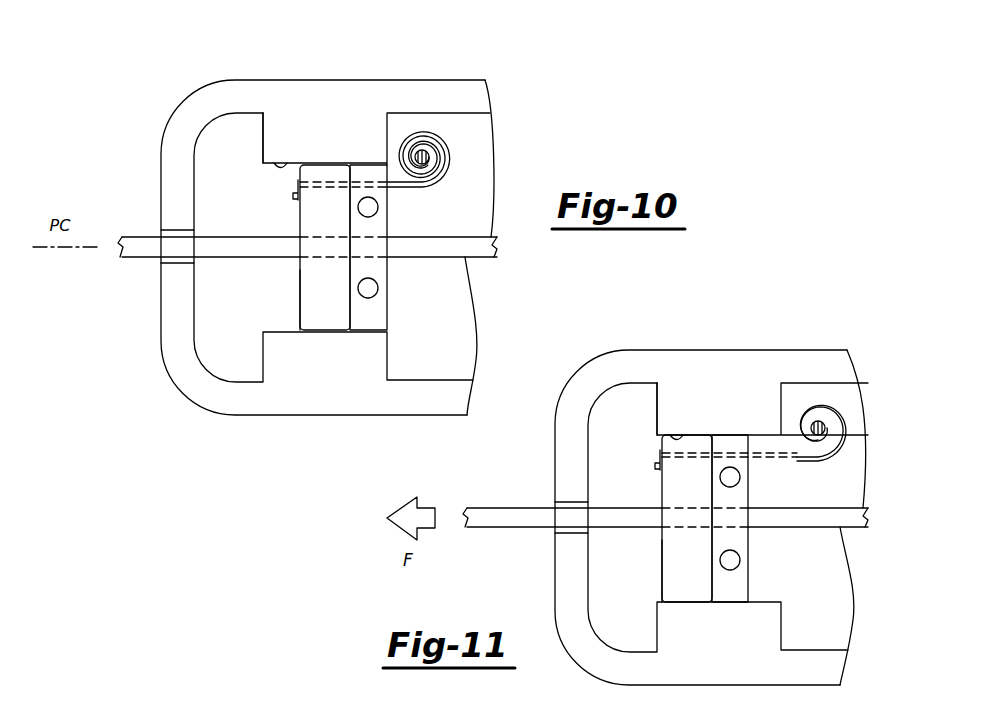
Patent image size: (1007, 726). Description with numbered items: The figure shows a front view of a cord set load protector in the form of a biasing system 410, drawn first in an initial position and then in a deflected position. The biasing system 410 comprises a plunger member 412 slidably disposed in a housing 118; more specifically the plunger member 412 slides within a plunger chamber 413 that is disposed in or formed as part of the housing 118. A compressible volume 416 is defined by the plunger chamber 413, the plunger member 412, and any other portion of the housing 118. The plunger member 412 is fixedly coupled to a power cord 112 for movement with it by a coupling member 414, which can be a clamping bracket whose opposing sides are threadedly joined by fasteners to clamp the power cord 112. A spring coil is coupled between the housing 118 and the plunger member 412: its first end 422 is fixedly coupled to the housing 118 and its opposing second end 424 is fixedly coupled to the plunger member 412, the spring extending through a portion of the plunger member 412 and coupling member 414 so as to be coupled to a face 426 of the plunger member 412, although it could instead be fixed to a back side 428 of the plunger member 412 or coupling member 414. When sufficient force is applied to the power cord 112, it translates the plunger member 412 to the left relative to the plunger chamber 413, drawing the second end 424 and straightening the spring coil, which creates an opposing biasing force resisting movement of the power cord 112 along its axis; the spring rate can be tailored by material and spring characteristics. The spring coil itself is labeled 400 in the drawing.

In FIG. 10, the biasing system 410 is at (215, 74).
In FIG. 11, the biasing system 410 is at (621, 322).
In FIG. 10, the housing 118 is at (280, 80).
In FIG. 11, the housing 118 is at (670, 350).
In FIG. 10, the plunger chamber 413 is at (285, 167).
In FIG. 11, the plunger chamber 413 is at (682, 439).
In FIG. 10, the compressible volume 416 is at (226, 192).
In FIG. 11, the compressible volume 416 is at (607, 446).
In FIG. 10, the second end 424 is at (292, 197).
In FIG. 11, the second end 424 is at (656, 468).
In FIG. 10, the first end 422 is at (426, 158).
In FIG. 11, the first end 422 is at (830, 424).
In FIG. 10, the spring 400 is at (446, 163).
In FIG. 11, the spring 400 is at (841, 445).
In FIG. 10, the power cord 112 is at (143, 237).
In FIG. 11, the power cord 112 is at (512, 508).
In FIG. 10, the plunger member 412 is at (327, 326).
In FIG. 11, the plunger member 412 is at (703, 597).
In FIG. 10, the face 426 is at (300, 288).
In FIG. 11, the face 426 is at (662, 556).
In FIG. 10, the coupling member 414 is at (375, 322).
In FIG. 11, the coupling member 414 is at (740, 588).
In FIG. 10, the back side 428 is at (389, 278).
In FIG. 11, the back side 428 is at (750, 560).